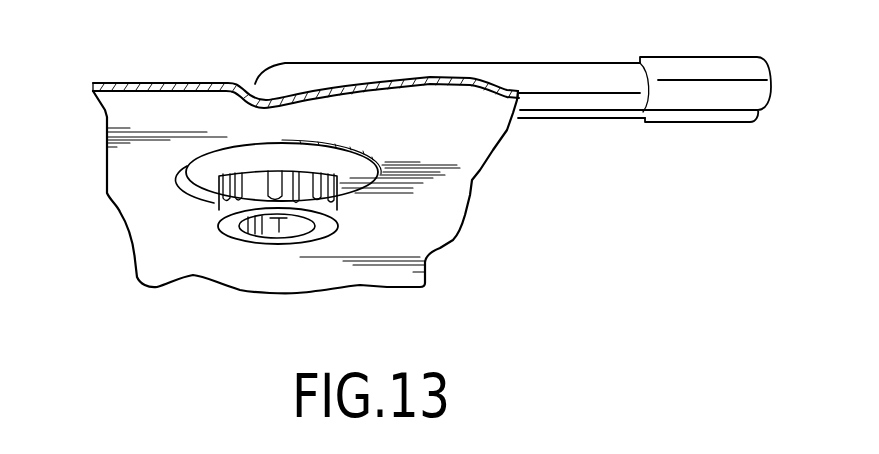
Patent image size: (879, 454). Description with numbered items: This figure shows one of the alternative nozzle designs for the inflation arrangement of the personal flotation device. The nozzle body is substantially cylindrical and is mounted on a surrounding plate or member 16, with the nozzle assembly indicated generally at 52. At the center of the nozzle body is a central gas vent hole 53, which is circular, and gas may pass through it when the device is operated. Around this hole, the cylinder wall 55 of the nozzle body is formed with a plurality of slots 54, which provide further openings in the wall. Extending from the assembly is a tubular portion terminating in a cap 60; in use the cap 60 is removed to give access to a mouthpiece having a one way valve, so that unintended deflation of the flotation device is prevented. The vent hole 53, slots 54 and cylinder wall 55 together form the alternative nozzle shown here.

The plate 16 is at (142, 107).
The mounting boss assembly 52 is at (340, 243).
The central gas vent hole 53 is at (308, 229).
The slots 54 is at (235, 192).
The cylinder wall 55 is at (225, 212).
The cap 60 is at (713, 95).